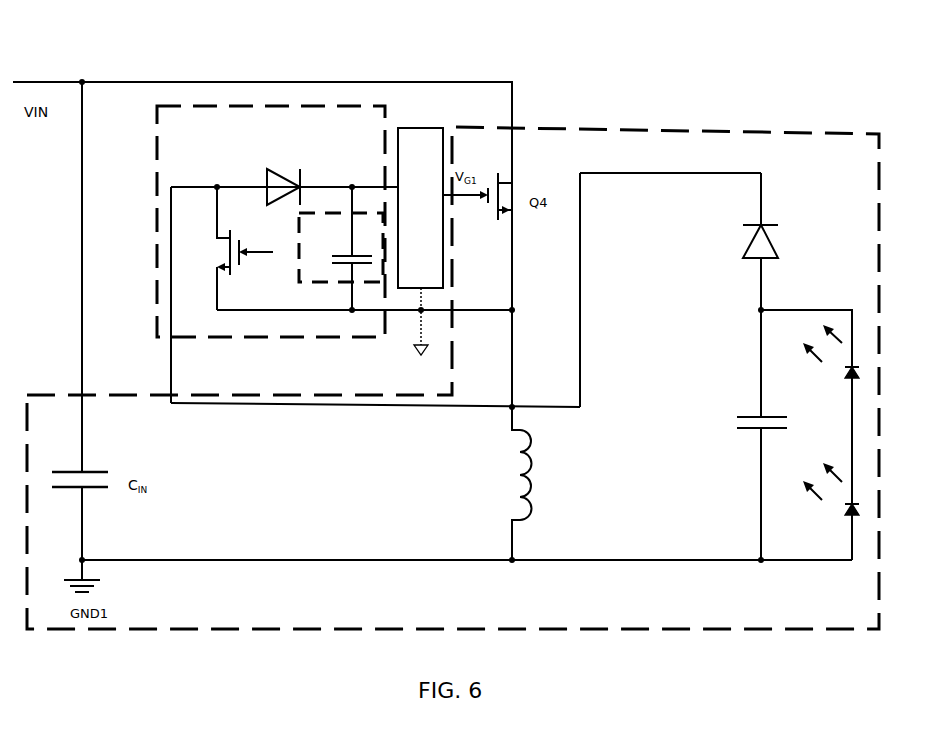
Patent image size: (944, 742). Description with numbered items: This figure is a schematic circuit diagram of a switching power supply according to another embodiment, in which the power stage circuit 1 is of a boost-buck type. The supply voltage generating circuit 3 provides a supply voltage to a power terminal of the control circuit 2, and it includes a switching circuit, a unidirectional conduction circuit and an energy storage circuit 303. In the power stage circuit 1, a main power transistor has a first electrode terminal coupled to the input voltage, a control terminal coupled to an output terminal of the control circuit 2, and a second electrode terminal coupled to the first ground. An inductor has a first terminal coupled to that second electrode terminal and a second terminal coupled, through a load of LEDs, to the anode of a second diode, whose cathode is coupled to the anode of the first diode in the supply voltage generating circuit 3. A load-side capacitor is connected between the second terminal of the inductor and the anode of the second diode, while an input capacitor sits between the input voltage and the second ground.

The power stage circuit 1 is at (638, 132).
The control circuit 2 is at (417, 128).
The supply voltage generating circuit 3 is at (334, 222).
The energy storage circuit 303 is at (330, 283).